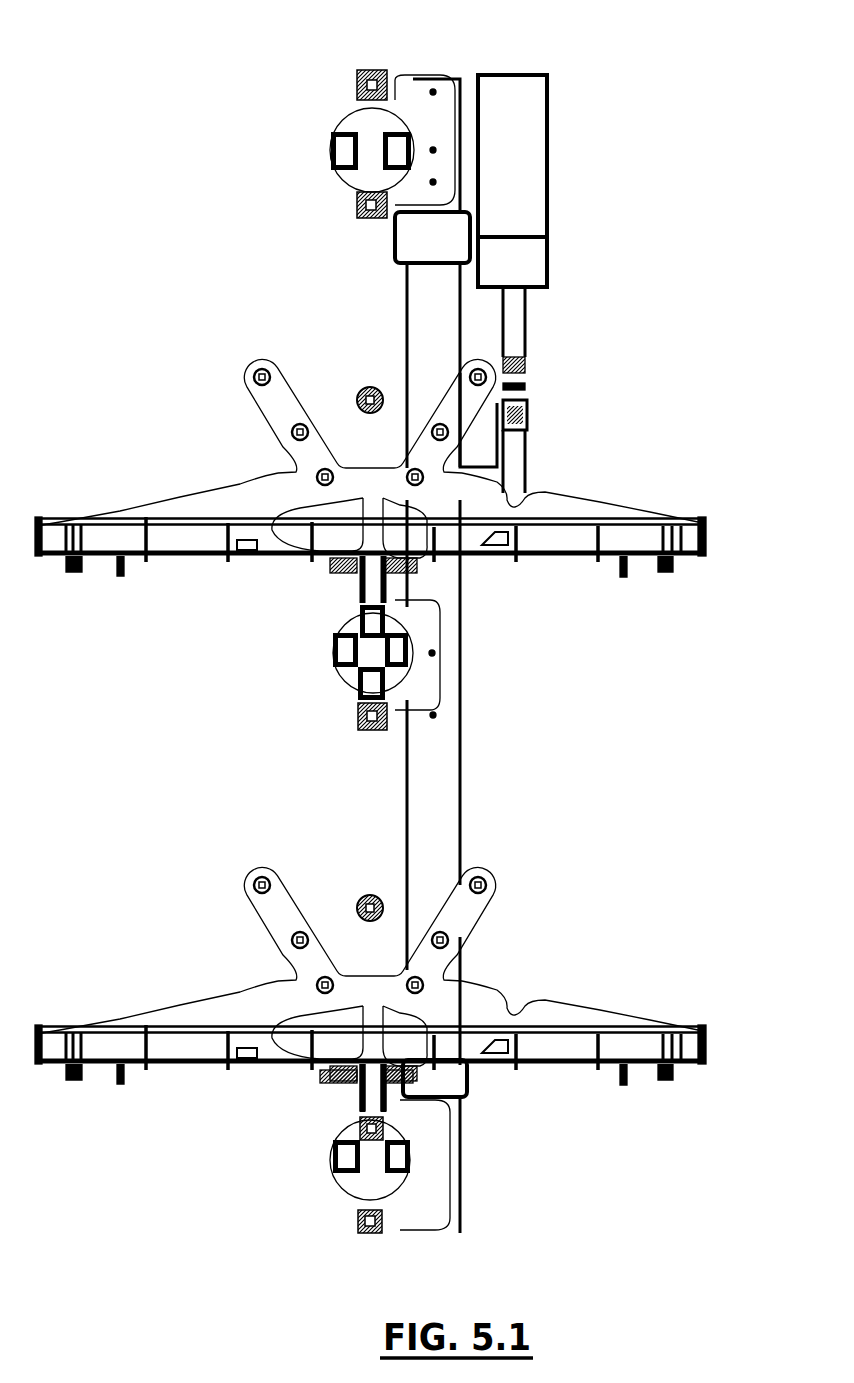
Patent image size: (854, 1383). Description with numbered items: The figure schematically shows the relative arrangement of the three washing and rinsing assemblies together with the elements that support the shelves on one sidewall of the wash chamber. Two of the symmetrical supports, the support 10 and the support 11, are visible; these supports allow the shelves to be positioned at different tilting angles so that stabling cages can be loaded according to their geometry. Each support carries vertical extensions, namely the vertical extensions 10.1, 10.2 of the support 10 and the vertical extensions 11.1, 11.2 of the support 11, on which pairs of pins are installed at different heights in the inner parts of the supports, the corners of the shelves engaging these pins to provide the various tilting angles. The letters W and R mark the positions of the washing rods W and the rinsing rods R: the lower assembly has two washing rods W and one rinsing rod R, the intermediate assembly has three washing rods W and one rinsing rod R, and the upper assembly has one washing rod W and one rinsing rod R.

The support 10 is at (270, 497).
The vertical extension 10.1 is at (272, 392).
The vertical extension 10.2 is at (458, 390).
The support 11 is at (258, 1005).
The vertical extension 11.1 is at (285, 912).
The vertical extension 11.2 is at (458, 897).
The rinsing rod R is at (347, 140).
The washing rod W is at (403, 137).